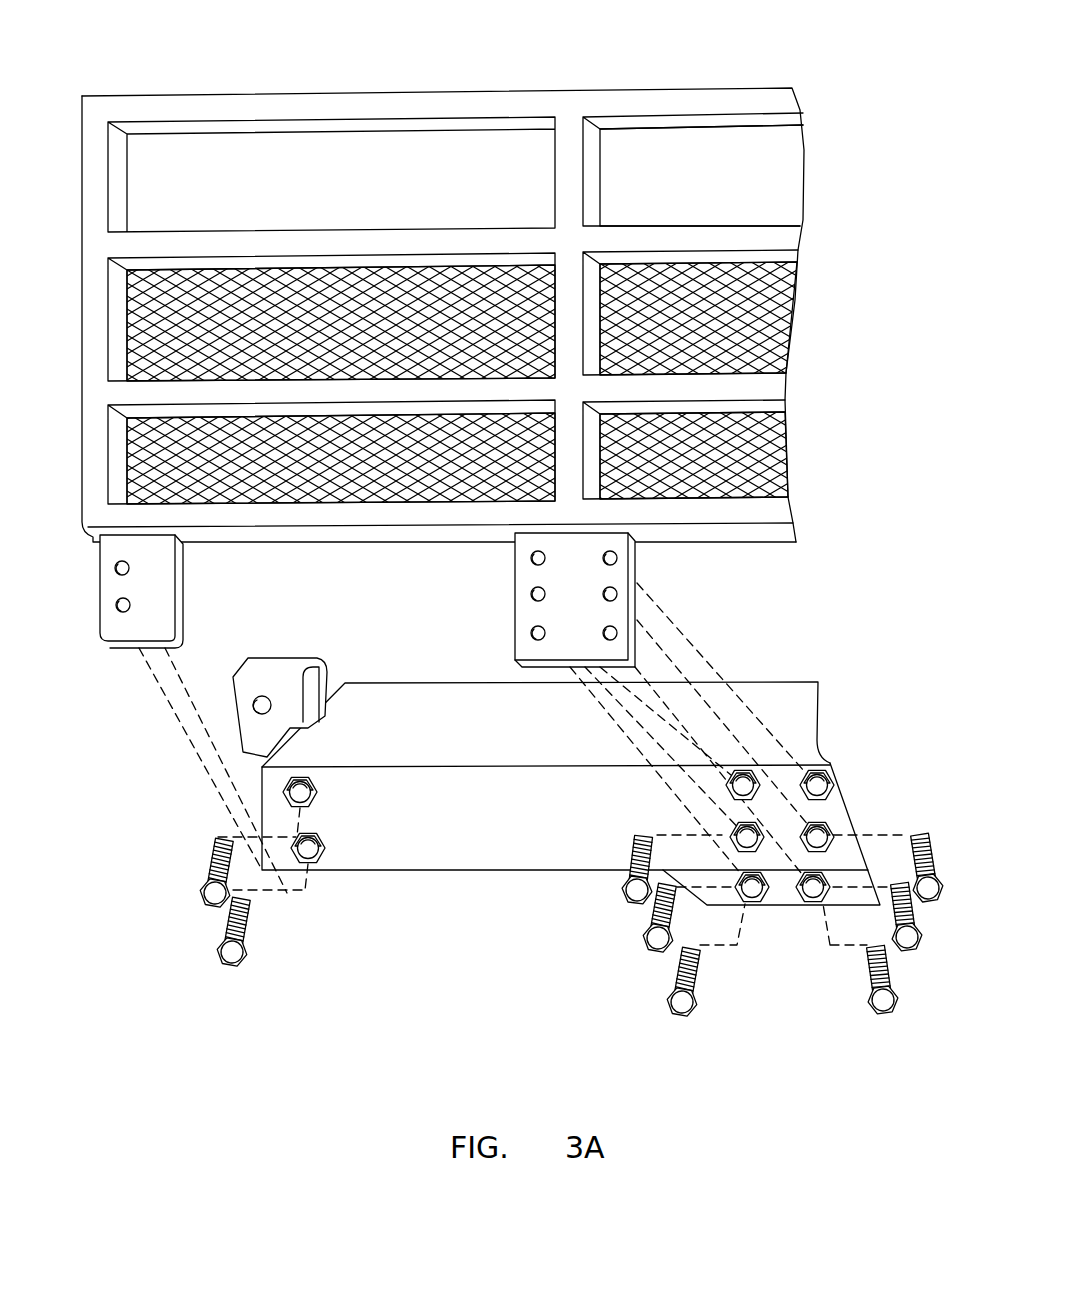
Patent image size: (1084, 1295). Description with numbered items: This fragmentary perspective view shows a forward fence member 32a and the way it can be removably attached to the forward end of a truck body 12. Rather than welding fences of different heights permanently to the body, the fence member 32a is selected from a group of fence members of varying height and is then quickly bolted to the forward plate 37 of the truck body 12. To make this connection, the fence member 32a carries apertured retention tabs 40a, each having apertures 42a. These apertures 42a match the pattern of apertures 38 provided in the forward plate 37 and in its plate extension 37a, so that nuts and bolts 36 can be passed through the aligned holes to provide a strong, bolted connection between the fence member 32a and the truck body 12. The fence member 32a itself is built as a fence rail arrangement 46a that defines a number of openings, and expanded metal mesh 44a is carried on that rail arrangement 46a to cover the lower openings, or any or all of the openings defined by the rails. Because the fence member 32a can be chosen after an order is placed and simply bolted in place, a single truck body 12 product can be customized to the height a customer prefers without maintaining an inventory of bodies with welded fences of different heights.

The truck body 12 is at (786, 676).
The forward fence member 32a is at (806, 246).
The bolts 36 is at (246, 925).
The forward plate 37 is at (497, 846).
The plate extension 37a is at (790, 897).
The apertures 38 is at (315, 852).
The retention tabs 40a is at (158, 613).
The apertures 42a is at (612, 558).
The expanded metal mesh 44a is at (330, 308).
The fence rail arrangement 46a is at (668, 107).